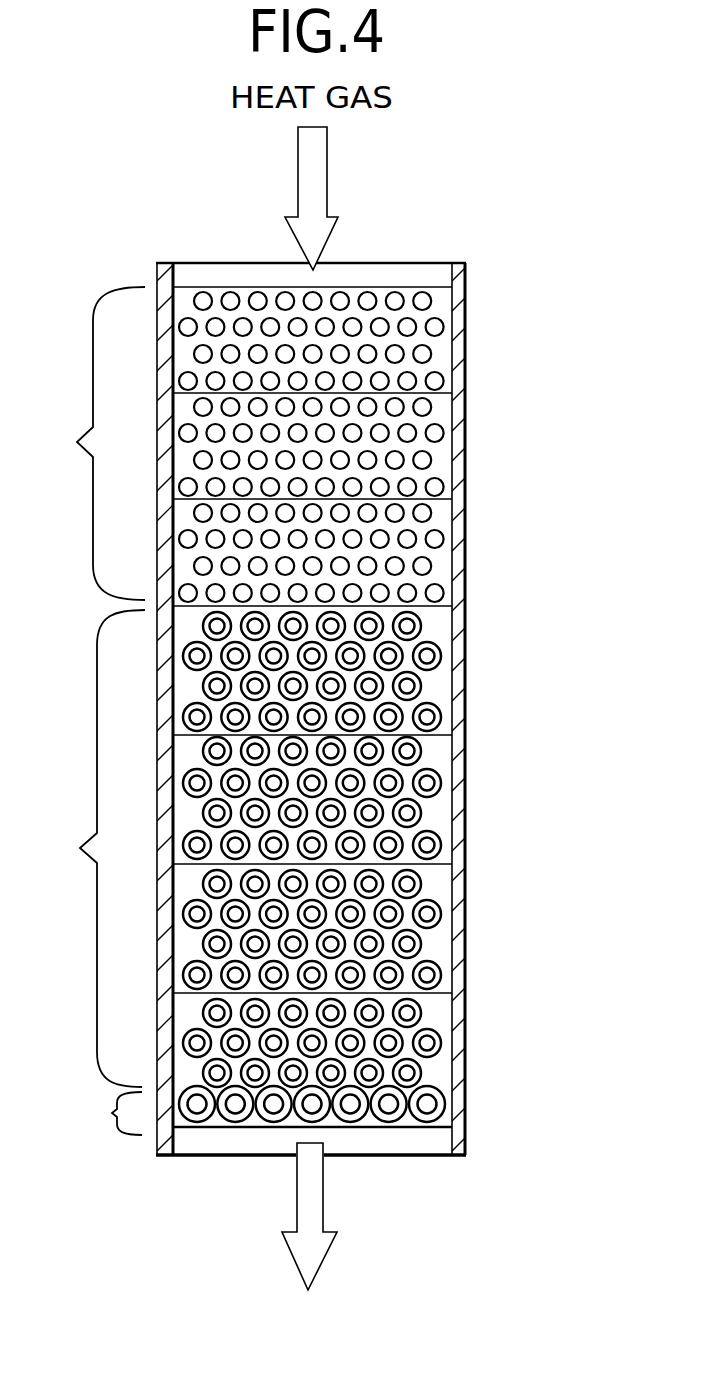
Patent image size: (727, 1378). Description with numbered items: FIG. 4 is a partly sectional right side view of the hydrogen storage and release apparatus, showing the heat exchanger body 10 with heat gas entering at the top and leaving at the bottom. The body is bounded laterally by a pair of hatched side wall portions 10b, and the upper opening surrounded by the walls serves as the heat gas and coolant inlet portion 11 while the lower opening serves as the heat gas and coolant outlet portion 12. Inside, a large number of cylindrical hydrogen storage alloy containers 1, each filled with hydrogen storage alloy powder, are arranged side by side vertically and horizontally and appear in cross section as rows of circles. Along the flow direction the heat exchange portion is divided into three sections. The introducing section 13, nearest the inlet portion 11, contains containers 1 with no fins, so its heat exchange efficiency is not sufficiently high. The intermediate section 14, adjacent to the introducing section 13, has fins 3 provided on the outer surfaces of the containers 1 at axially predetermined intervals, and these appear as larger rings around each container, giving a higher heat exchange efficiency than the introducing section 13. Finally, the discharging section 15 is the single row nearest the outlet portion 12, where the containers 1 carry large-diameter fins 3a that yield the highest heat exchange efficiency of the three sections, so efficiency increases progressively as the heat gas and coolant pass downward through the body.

The hydrogen storage alloy container 1 is at (181, 326).
The fin 3 is at (421, 684).
The large-diameter fin 3a is at (440, 1091).
The heat exchanger body 10 is at (478, 597).
The side wall portion 10b is at (157, 422).
The heat gas and coolant inlet portion 11 is at (420, 262).
The heat gas and coolant outlet portion 12 is at (228, 1143).
The introducing section 13 is at (95, 443).
The intermediate section 14 is at (95, 848).
The discharging section 15 is at (109, 1113).